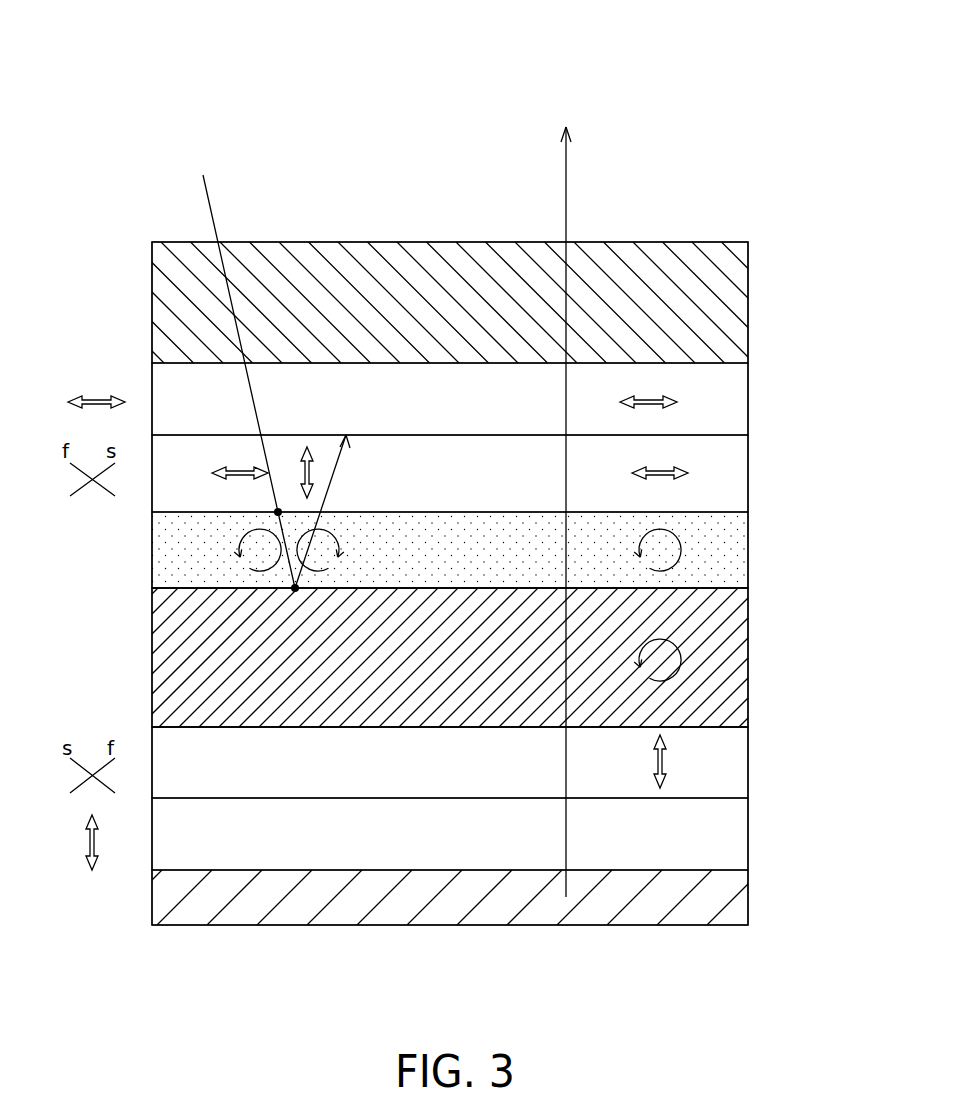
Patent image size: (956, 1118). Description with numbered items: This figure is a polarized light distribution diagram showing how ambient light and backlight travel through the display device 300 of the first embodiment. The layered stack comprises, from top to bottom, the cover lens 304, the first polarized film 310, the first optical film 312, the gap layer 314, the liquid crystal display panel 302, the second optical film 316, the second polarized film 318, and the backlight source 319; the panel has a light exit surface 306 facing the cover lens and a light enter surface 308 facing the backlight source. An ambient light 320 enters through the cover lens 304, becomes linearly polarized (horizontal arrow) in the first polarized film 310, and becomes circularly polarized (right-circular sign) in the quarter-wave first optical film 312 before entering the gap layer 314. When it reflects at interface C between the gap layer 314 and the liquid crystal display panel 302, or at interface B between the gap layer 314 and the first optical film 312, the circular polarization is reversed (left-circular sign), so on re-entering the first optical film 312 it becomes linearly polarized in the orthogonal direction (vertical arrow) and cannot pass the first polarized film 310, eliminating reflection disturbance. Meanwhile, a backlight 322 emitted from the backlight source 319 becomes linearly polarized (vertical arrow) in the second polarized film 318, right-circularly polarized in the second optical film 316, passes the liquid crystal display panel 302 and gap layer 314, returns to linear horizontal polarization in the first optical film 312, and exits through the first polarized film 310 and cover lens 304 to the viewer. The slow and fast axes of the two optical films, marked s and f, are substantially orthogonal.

The display device 300 is at (725, 88).
The liquid crystal display panel 302 is at (735, 655).
The cover lens 304 is at (742, 302).
The light exit surface 306 is at (182, 588).
The light enter surface 308 is at (182, 727).
The first polarized film 310 is at (742, 418).
The first optical film 312 is at (742, 478).
The gap layer 314 is at (730, 550).
The second optical film 316 is at (742, 748).
The second polarized film 318 is at (742, 832).
The backlight source 319 is at (742, 895).
The ambient light 320 is at (208, 200).
The backlight 322 is at (566, 170).